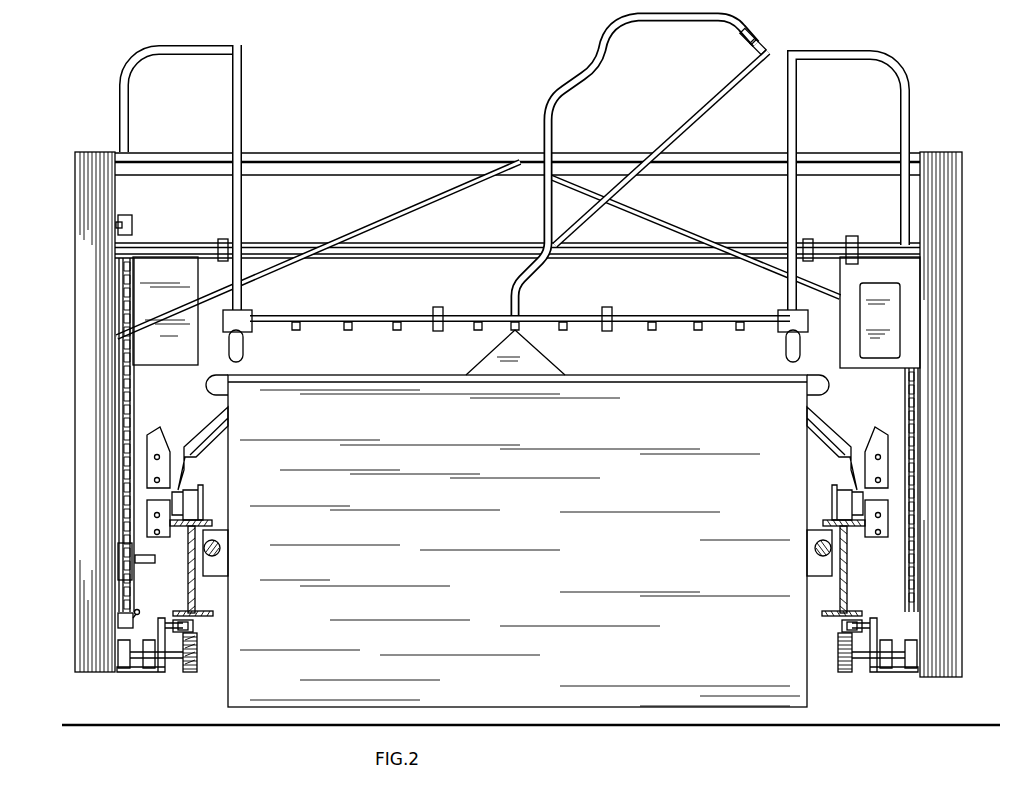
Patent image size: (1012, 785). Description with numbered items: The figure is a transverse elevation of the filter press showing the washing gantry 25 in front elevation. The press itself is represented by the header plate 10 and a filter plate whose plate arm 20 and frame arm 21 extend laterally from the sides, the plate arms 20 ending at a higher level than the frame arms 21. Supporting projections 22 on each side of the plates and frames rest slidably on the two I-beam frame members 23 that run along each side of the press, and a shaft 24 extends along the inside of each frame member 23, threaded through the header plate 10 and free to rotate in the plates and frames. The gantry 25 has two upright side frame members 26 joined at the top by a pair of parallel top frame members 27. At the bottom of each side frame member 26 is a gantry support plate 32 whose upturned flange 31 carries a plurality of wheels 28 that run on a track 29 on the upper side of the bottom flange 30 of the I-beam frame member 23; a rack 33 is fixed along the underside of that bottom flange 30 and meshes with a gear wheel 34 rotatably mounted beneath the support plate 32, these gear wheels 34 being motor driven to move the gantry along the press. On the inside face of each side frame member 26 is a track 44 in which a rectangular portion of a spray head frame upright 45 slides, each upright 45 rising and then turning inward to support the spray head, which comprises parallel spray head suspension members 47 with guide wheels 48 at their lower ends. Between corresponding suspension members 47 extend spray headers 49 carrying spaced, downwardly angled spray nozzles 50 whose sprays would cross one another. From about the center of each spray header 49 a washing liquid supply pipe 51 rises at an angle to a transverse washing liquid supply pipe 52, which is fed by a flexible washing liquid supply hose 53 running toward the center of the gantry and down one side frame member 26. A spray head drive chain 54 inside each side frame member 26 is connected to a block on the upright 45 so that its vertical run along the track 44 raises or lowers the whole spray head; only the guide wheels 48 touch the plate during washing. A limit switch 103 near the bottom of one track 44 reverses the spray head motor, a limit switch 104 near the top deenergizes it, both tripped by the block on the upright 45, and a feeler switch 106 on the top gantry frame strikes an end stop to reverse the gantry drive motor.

The header plate 10 is at (810, 412).
The plate arm 20 is at (208, 432).
The frame arm 21 is at (222, 466).
The supporting projection 22 is at (214, 506).
The I-beam frame member 23 is at (197, 586).
The shaft 24 is at (221, 552).
The gantry 25 is at (112, 150).
The upright side frame member 26 is at (78, 225).
The top frame member 27 is at (350, 153).
The wheel 28 is at (185, 632).
The track 29 is at (195, 626).
The bottom flange 30 is at (214, 613).
The upturned flange 31 is at (166, 668).
The gantry support plate 32 is at (140, 674).
The rack 33 is at (199, 644).
The gear wheel 34 is at (199, 662).
The track 44 is at (135, 205).
The spray head frame upright 45 is at (133, 110).
The spray head suspension member 47 is at (243, 110).
The guide wheel 48 is at (248, 348).
The spray header 49 is at (380, 315).
The spray nozzle 50 is at (396, 334).
The washing liquid supply pipe 51 is at (688, 126).
The transverse washing liquid supply pipe 52 is at (770, 62).
The flexible washing liquid supply hose 53 is at (572, 78).
The spray head drive chain 54 is at (133, 395).
The limit switch 103 is at (125, 621).
The limit switch 104 is at (133, 224).
The feeler switch 106 is at (128, 560).